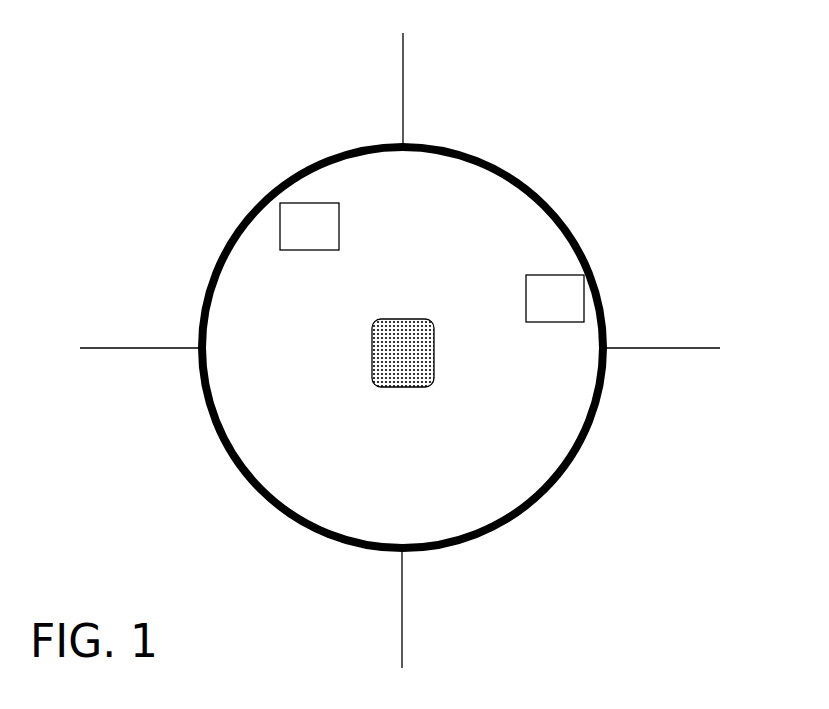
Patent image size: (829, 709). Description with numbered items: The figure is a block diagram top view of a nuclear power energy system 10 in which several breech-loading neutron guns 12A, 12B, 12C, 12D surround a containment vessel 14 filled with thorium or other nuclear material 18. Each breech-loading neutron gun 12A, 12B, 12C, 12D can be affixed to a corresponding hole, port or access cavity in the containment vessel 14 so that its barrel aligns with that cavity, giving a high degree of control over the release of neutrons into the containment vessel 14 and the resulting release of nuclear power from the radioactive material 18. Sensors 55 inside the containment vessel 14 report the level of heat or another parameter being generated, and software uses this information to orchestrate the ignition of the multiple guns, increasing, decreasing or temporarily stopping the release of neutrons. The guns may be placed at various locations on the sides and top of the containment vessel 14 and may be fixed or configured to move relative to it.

The system 10 is at (115, 566).
The breech-loading neutron gun 12A is at (130, 348).
The breech-loading neutron gun 12B is at (403, 85).
The breech-loading neutron gun 12C is at (667, 348).
The breech-loading neutron gun 12D is at (397, 640).
The containment vessel 14 is at (562, 220).
The nuclear material 18 is at (418, 366).
The sensors 55 is at (326, 240).